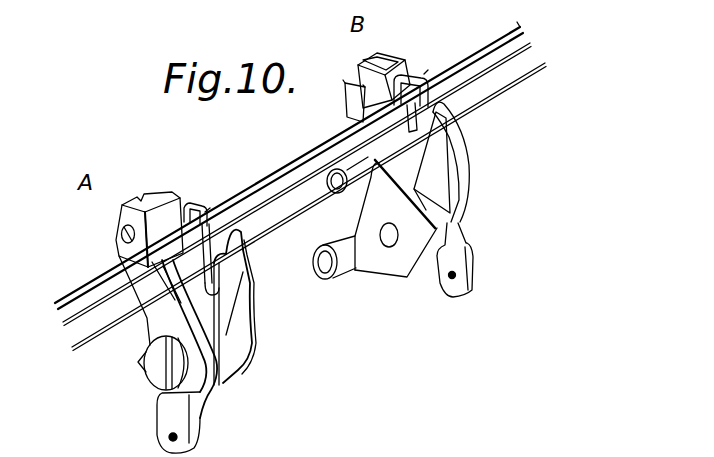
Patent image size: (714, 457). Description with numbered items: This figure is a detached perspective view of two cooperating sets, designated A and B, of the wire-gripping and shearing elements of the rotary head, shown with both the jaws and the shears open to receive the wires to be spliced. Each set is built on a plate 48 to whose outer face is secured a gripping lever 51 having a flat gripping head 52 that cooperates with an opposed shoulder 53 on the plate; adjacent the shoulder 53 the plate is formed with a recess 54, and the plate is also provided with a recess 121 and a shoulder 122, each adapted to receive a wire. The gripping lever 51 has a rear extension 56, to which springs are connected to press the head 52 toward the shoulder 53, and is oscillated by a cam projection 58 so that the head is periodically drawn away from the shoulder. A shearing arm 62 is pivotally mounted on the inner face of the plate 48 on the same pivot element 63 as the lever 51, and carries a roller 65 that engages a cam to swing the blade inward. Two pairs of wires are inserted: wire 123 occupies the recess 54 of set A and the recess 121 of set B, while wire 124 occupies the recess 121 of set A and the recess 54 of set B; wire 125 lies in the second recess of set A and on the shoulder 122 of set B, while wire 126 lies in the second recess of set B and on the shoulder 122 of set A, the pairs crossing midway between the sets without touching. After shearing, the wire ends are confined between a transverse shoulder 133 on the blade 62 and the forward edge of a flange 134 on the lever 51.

The plates 48 is at (250, 368).
The gripping lever 51 is at (147, 323).
The gripping head 52 is at (147, 212).
The shoulder 53 is at (196, 206).
The recess 54 is at (362, 82).
The rear extension 56 is at (191, 428).
The cam projection 58 is at (436, 138).
The shearing arm 62 is at (248, 286).
The pivot element 63 is at (388, 229).
The roller 65 is at (328, 244).
The recess 121 is at (210, 208).
The shoulder 122 is at (210, 295).
The wire 123 is at (523, 32).
The wire 124 is at (520, 26).
The wire 125 is at (545, 63).
The wire 126 is at (530, 43).
The transverse shoulder 133 is at (238, 228).
The flange 134 is at (183, 203).